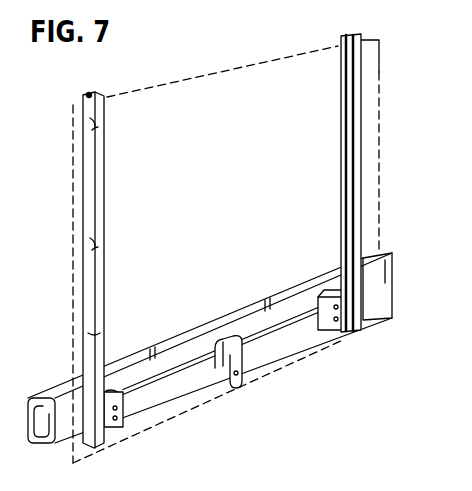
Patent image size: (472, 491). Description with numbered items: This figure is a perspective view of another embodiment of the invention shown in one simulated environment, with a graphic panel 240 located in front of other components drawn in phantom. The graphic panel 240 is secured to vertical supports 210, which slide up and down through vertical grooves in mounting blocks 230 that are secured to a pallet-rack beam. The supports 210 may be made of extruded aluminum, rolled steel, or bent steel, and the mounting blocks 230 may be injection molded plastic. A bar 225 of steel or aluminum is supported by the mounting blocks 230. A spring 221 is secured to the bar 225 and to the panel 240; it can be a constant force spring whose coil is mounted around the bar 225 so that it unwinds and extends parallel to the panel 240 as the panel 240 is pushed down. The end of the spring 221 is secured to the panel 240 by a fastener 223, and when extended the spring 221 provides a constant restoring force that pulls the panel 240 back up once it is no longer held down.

The vertical supports 210 is at (91, 93).
The graphic panel 240 is at (380, 70).
The mounting blocks 230 is at (125, 392).
The bar 225 is at (155, 393).
The fastener 223 is at (240, 380).
The spring 221 is at (207, 398).